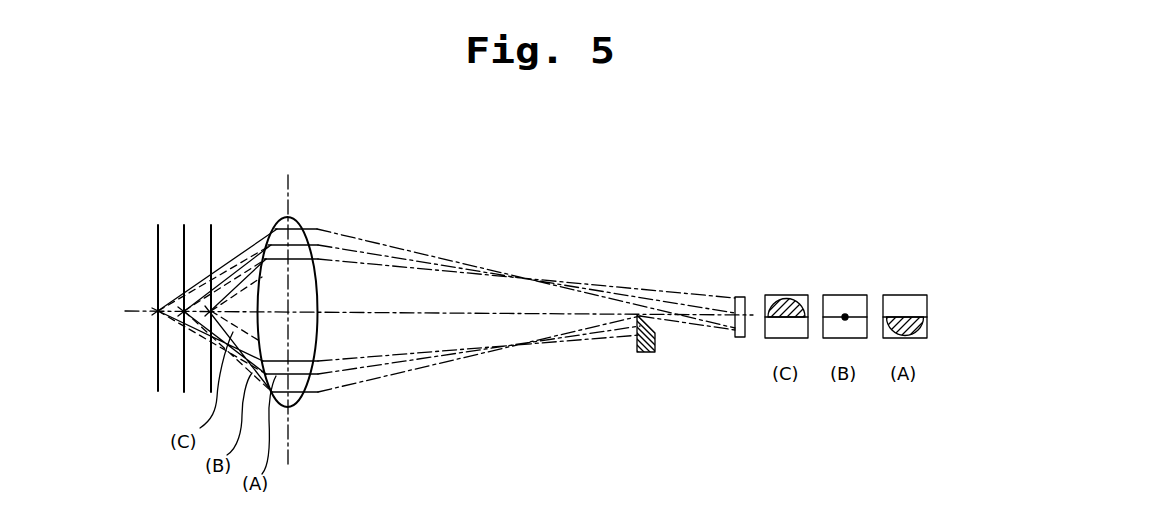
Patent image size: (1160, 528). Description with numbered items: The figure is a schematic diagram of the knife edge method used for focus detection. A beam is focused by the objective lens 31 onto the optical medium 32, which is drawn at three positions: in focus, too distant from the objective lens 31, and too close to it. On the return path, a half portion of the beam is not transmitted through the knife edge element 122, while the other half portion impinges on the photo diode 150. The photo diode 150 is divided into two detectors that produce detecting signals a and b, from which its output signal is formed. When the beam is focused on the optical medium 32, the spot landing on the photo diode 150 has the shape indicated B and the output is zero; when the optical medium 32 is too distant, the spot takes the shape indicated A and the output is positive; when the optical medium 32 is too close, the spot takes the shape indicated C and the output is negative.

The objective lens 31 is at (284, 218).
The optical medium 32 is at (157, 248).
The knife edge element 122 is at (653, 345).
The photo diode 150 is at (741, 297).
The detecting signal a is at (922, 337).
The detecting signal b is at (918, 297).